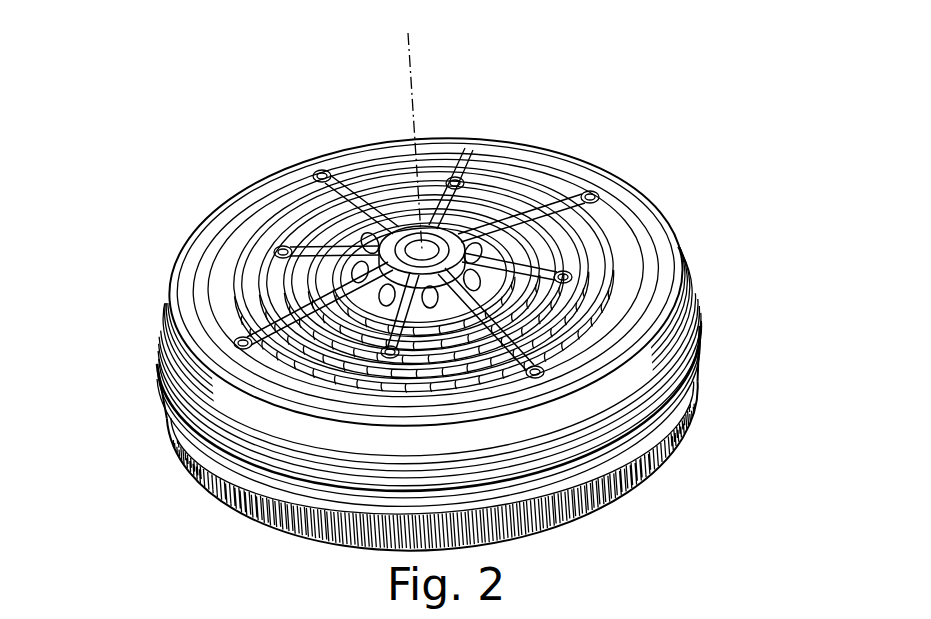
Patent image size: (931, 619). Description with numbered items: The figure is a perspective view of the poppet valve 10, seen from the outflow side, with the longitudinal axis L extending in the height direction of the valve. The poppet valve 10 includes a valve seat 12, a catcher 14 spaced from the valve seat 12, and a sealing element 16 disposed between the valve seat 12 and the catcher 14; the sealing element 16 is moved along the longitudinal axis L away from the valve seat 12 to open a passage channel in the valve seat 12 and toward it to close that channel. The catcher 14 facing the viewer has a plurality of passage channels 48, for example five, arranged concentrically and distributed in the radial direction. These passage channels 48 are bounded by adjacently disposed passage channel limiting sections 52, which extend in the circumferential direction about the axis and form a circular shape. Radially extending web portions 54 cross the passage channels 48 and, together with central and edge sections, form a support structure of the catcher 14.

The poppet valve 10 is at (692, 166).
The valve seat 12 is at (683, 368).
The catcher 14 is at (570, 170).
The sealing element 16 is at (672, 338).
The passage channels 48 is at (270, 267).
The passage channel limiting sections 52 is at (210, 397).
The web portions 54 is at (205, 341).
The longitudinal axis L is at (412, 73).